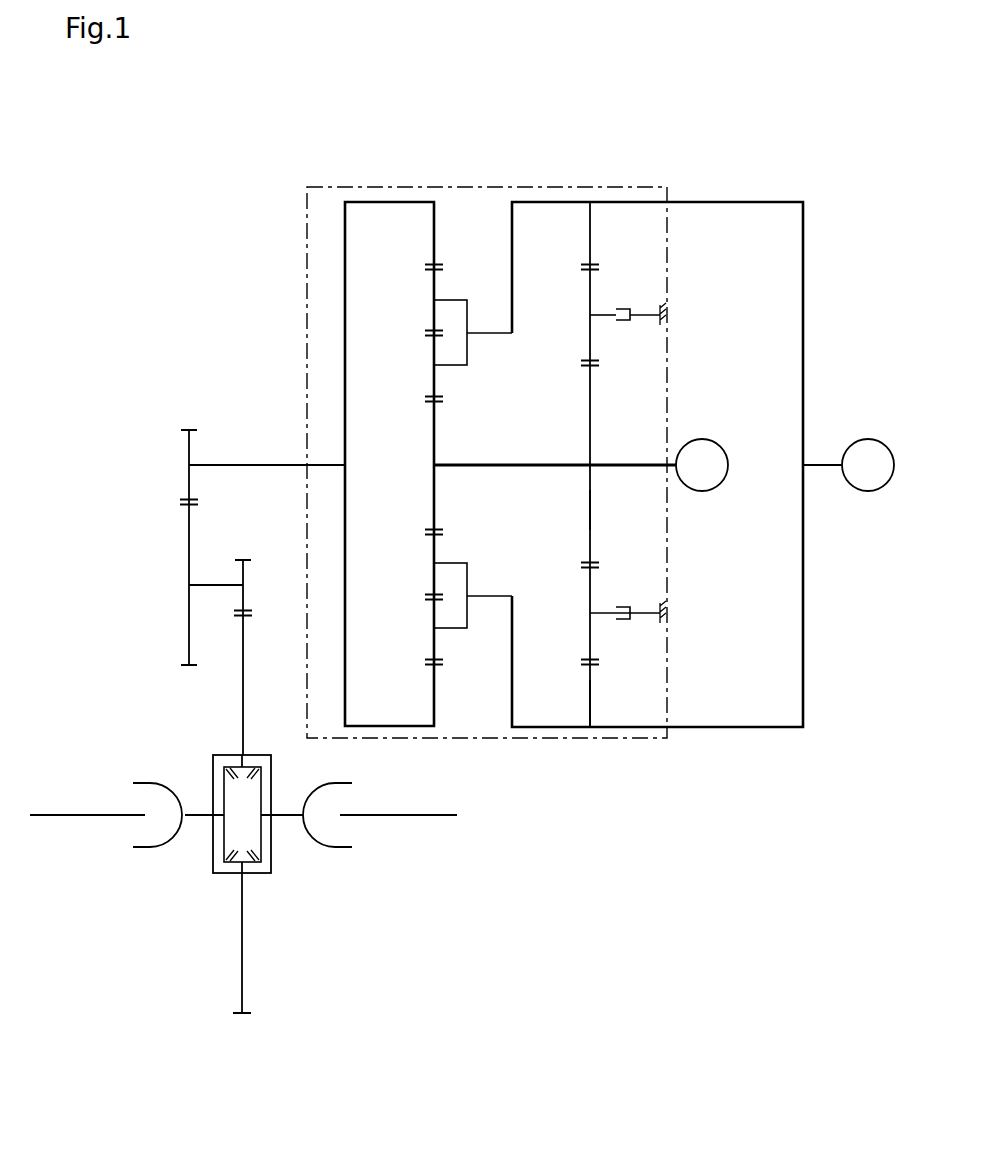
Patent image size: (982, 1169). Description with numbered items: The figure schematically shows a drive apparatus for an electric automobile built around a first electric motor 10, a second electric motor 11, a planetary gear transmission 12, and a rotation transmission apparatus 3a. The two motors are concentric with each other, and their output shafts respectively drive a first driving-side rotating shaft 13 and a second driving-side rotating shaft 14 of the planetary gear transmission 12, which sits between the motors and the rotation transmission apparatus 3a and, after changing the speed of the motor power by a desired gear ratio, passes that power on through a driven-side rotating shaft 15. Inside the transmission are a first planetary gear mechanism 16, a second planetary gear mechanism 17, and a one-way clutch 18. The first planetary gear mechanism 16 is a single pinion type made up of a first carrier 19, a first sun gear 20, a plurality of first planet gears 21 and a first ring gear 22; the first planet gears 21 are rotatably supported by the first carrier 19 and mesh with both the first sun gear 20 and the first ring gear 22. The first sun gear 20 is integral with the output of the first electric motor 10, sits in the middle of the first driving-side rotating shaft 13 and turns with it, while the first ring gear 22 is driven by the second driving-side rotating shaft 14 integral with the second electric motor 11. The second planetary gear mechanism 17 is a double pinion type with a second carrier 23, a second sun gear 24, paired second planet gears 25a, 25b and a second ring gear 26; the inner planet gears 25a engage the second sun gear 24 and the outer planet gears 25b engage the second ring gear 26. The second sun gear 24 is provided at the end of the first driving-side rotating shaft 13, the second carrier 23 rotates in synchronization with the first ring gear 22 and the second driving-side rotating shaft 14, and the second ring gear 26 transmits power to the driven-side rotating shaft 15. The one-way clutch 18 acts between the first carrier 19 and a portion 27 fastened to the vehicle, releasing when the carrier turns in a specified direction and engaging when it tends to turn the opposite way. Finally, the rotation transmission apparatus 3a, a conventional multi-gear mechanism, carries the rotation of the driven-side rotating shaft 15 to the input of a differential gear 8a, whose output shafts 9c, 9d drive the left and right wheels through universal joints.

The rotation transmission apparatus 3a is at (178, 553).
The differential gear 8a is at (272, 871).
The output shaft of differential gear 9c is at (285, 818).
The output shaft of differential gear 9d is at (200, 818).
The first electric motor 10 is at (710, 440).
The second electric motor 11 is at (878, 487).
The planetary gear transmission 12 is at (503, 184).
The first driving-side rotating shaft 13 is at (645, 466).
The second driving-side rotating shaft 14 is at (830, 462).
The driven-side rotating shaft 15 is at (325, 463).
The first planetary gear mechanism 16 is at (590, 230).
The second planetary gear mechanism 17 is at (434, 230).
The one-way clutch 18 is at (631, 307).
The first carrier 19 is at (606, 318).
The first sun gear 20 is at (589, 510).
The first planet gears 21 is at (589, 343).
The first ring gear 22 is at (591, 694).
The second carrier 23 is at (492, 596).
The second sun gear 24 is at (436, 440).
The second planet gears (inner diameter side) 25a is at (434, 382).
The second planet gears (outer diameter side) 25b is at (434, 287).
The second ring gear 26 is at (436, 704).
The portion fastened to the vehicle 27 is at (668, 313).